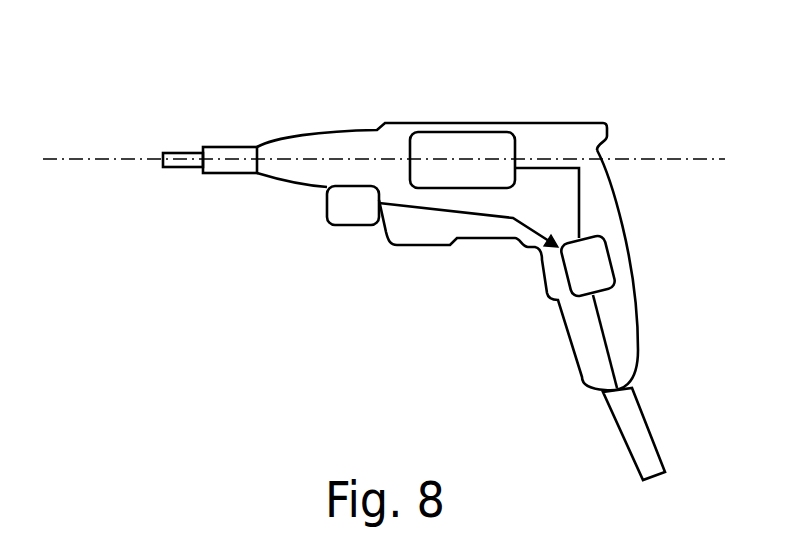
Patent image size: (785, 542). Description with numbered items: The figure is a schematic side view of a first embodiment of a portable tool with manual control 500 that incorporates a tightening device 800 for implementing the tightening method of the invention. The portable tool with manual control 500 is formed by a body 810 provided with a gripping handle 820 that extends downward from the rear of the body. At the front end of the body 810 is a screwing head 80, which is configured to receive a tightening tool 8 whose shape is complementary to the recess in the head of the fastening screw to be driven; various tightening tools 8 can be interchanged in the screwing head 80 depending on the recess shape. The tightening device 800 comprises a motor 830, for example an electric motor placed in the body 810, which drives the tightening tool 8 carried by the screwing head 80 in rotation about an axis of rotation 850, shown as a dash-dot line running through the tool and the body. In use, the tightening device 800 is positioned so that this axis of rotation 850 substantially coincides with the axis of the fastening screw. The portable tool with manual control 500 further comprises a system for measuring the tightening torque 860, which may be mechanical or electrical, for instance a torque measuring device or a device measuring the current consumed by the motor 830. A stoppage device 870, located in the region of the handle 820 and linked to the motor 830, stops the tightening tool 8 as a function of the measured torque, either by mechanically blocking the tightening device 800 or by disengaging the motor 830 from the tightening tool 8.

The tightening tool 8 is at (177, 152).
The screwing head 80 is at (218, 148).
The portable tool with manual control 500 is at (383, 251).
The tightening device 800 is at (478, 112).
The body 810 is at (562, 134).
The gripping handle 820 is at (628, 323).
The motor 830 is at (492, 190).
The axis of rotation 850 is at (105, 160).
The system for measuring the tightening torque 860 is at (340, 200).
The stoppage device 870 is at (600, 265).